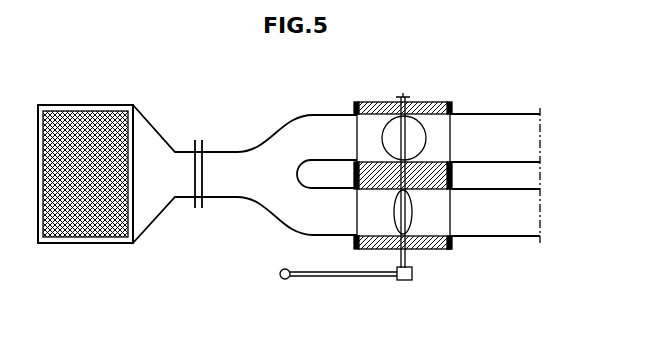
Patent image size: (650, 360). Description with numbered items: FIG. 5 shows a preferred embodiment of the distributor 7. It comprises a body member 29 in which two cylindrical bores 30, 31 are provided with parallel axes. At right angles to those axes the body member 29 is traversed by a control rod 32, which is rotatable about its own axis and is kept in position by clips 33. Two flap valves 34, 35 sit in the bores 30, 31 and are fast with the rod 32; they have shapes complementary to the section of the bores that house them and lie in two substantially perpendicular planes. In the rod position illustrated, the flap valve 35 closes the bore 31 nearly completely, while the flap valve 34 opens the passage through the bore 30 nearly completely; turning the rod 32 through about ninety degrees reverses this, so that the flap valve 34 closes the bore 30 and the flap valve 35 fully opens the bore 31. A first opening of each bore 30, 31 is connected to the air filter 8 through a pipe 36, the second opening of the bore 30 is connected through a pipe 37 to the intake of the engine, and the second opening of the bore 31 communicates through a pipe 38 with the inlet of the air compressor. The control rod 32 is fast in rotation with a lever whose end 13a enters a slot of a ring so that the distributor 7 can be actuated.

The air filter 8 is at (72, 122).
The pipe 36 is at (280, 122).
The cylindrical bore 30 is at (370, 118).
The cylindrical bore 31 is at (372, 232).
The valve housing 7 is at (443, 98).
The clips 33 is at (400, 99).
The body member 29 is at (453, 248).
The control rod 32 is at (404, 93).
The flap valve 34 is at (418, 140).
The flap valve 35 is at (408, 212).
The pipe 37 is at (531, 113).
The pipe 38 is at (533, 238).
The end of lever 13a is at (285, 279).